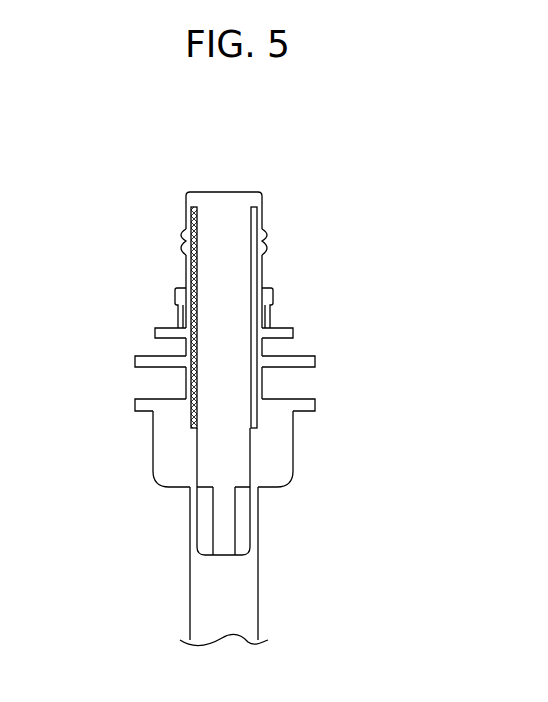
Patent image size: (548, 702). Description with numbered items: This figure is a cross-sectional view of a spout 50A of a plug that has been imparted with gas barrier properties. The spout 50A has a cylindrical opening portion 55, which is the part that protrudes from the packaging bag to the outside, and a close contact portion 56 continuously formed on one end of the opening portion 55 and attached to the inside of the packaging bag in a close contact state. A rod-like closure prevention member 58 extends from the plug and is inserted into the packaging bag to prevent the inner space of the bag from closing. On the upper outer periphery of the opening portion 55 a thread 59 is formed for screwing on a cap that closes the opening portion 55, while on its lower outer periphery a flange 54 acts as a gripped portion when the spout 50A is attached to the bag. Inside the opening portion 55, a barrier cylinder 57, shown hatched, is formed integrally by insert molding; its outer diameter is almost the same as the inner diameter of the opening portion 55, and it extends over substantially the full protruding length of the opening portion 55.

The spout 50A is at (380, 163).
The cylindrical opening portion 55 is at (370, 192).
The thread 59 is at (185, 233).
The barrier cylinder 57 is at (250, 228).
The flange 54 is at (165, 330).
The close contact portion 56 is at (285, 455).
The rod-like closure prevention member 58 is at (248, 585).